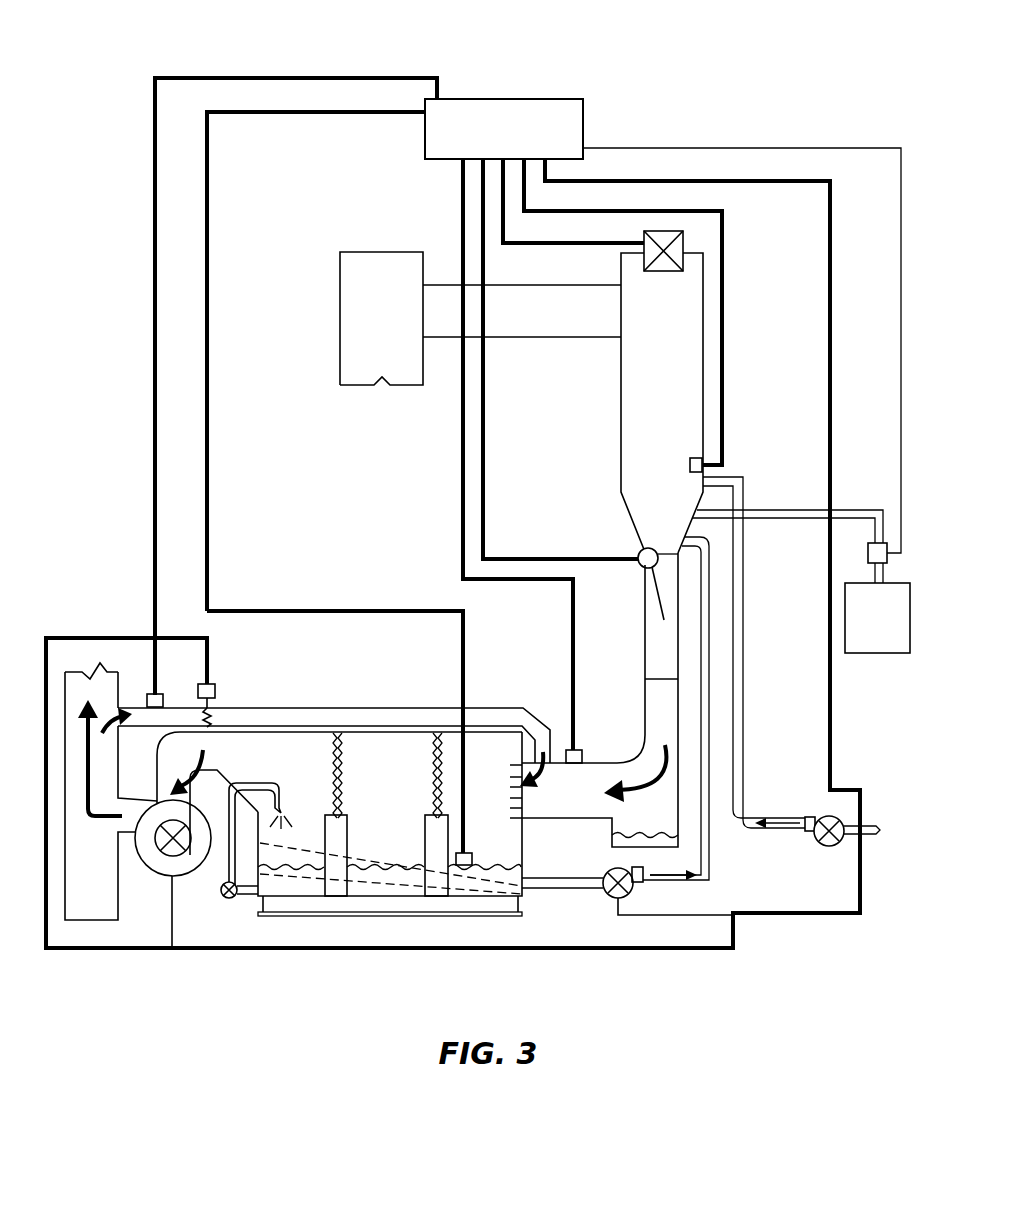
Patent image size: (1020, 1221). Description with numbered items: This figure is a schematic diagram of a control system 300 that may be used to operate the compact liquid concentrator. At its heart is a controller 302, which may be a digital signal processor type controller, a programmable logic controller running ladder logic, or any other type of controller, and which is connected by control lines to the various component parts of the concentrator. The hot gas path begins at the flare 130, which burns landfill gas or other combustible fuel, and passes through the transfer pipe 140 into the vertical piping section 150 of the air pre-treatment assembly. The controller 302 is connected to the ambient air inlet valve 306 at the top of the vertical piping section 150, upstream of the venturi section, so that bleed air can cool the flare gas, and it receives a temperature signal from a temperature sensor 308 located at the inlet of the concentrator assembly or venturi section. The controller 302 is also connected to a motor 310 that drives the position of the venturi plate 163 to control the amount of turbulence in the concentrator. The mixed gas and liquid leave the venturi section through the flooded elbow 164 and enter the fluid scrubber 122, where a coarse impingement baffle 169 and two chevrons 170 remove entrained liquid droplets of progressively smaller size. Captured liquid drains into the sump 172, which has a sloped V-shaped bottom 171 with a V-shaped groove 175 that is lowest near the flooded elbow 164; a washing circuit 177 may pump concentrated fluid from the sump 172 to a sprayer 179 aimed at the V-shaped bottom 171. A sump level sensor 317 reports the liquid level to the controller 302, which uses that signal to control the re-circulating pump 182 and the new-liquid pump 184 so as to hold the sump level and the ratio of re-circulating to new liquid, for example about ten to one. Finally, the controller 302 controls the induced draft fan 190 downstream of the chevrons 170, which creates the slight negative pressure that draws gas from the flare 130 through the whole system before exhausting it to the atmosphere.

The control system 300 is at (671, 98).
The controller 302 is at (504, 98).
The fluid scrubber 122 is at (511, 880).
The flare 130 is at (363, 327).
The transfer pipe 140 is at (512, 317).
The vertical piping section 150 is at (644, 390).
The venturi plate 163 is at (658, 600).
The flooded elbow 164 is at (633, 748).
The coarse impingement baffle 169 is at (515, 820).
The chevrons 170 is at (344, 775).
The V-shaped bottom 171 is at (298, 848).
The sump 172 is at (383, 888).
The V-shaped groove 175 is at (305, 874).
The washing circuit 177 is at (214, 910).
The sprayer 179 is at (281, 802).
The pump 182 is at (606, 870).
The pump 184 is at (829, 847).
The induced draft fan 190 is at (156, 872).
The ambient air inlet valve 306 is at (664, 273).
The temperature sensor 308 is at (690, 463).
The motor 310 is at (640, 551).
The sump level sensor 317 is at (463, 868).